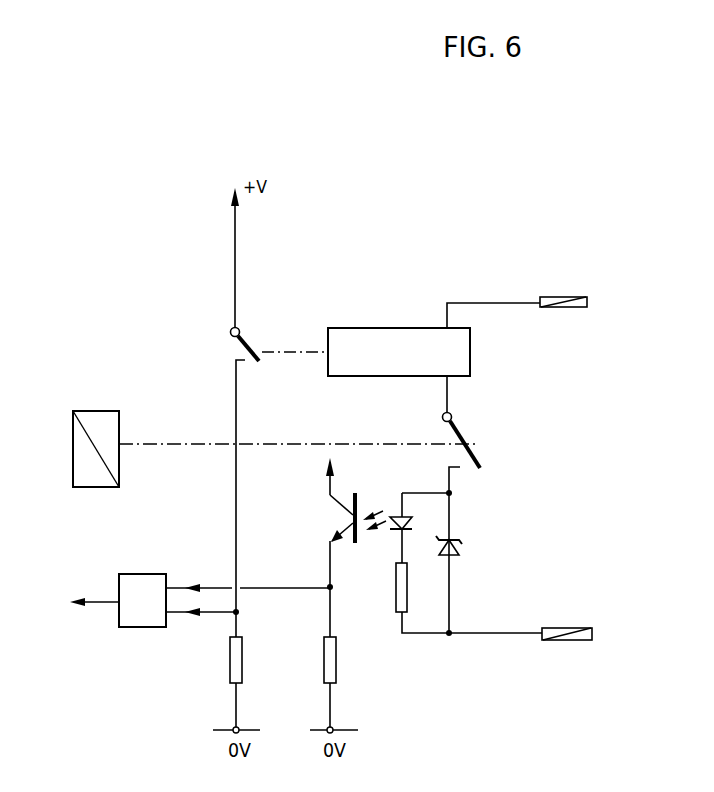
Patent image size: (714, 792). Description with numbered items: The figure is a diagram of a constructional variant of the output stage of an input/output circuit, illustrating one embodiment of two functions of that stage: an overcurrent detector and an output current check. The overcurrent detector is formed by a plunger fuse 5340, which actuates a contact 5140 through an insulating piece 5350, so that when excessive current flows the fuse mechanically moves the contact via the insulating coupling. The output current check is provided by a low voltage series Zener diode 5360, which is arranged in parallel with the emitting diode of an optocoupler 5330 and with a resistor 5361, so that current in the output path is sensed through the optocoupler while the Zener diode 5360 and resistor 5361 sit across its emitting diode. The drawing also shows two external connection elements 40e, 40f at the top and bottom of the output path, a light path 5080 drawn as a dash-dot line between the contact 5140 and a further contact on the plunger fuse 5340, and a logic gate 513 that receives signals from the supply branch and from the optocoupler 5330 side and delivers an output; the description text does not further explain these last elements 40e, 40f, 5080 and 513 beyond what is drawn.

The contact 5140 is at (238, 345).
The insulating piece 5350 is at (285, 351).
The plunger fuse 5340 is at (470, 350).
The terminal 40e is at (580, 297).
The terminal 40f is at (589, 640).
The light beam 5080 is at (443, 424).
The optocoupler 5330 is at (360, 500).
The Zener diode 5360 is at (461, 544).
The resistor 5361 is at (396, 590).
The AND gate 513 is at (138, 628).